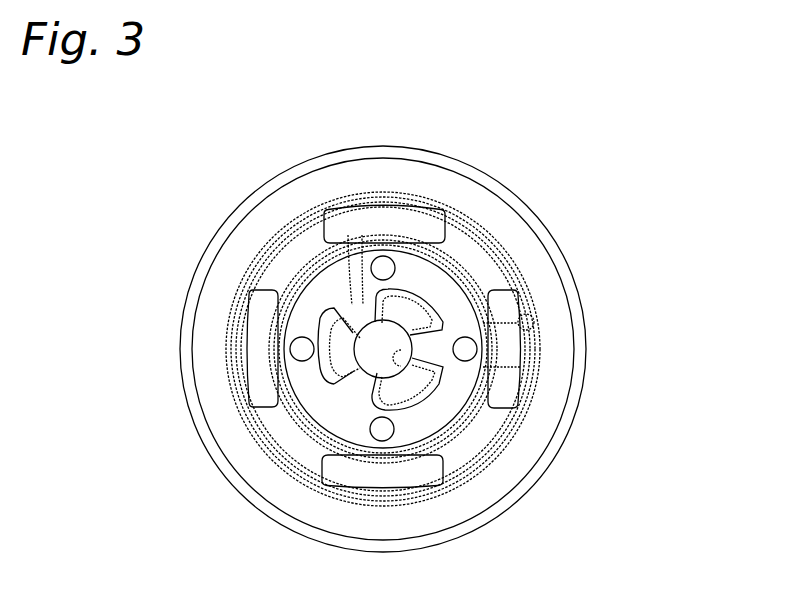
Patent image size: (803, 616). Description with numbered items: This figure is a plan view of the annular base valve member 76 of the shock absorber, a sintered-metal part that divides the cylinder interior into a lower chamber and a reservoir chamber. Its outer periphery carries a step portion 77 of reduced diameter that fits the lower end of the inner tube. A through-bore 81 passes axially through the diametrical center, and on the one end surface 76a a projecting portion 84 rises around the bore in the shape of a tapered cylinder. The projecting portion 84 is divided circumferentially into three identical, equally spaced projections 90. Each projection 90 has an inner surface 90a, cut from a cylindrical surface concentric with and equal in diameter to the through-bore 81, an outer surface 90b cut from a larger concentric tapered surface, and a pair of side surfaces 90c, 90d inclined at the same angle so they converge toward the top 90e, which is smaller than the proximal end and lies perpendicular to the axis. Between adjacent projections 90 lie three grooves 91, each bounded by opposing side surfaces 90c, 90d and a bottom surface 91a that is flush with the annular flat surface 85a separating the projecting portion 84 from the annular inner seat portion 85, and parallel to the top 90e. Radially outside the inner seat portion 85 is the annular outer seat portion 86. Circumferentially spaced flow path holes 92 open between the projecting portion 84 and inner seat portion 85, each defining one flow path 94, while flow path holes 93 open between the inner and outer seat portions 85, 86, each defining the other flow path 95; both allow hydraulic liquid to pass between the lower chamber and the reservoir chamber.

The base valve member 76 is at (566, 172).
The one end surface 76a is at (527, 241).
The step portion 77 is at (497, 505).
The through-bore 81 is at (478, 402).
The projecting portion 84 is at (300, 270).
The inner seat portion 85 is at (436, 358).
The annular flat surface 85a is at (312, 410).
The outer seat portion 86 is at (480, 221).
The projection 90 is at (305, 347).
The inner surface 90a is at (341, 363).
The outer surface 90b is at (322, 328).
The side surface 90c is at (345, 298).
The side surface 90d is at (367, 300).
The top 90e is at (320, 386).
The groove 91 is at (327, 298).
The bottom surface 91a is at (348, 240).
The flow path hole 92 is at (531, 366).
The flow path hole 93 is at (534, 321).
The flow path 94 is at (455, 351).
The flow path 95 is at (517, 363).